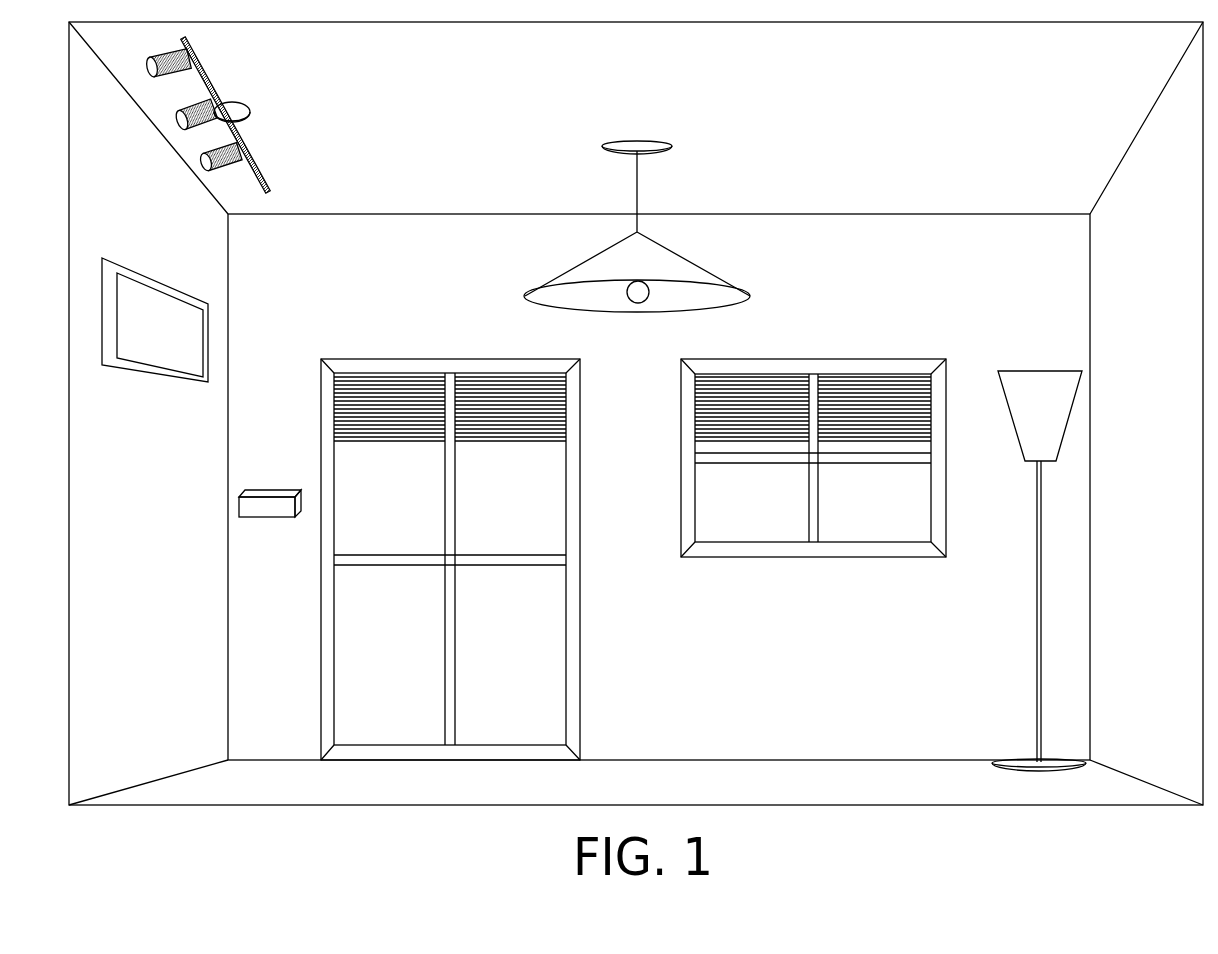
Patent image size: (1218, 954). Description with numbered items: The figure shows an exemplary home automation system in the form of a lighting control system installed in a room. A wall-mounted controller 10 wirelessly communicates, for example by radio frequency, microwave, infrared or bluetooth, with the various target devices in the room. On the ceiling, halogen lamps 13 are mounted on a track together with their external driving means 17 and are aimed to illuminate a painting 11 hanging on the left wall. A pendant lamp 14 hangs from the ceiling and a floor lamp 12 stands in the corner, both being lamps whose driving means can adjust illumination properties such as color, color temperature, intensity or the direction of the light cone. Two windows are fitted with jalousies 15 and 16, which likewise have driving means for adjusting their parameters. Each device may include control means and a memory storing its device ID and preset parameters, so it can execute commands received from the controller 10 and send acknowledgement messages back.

The controller 10 is at (271, 508).
The painting 11 is at (132, 308).
The lamp 12 is at (1036, 641).
The halogen lamps 13 is at (205, 138).
The lamp 14 is at (687, 252).
The jalousie 15 is at (395, 383).
The jalousie 16 is at (870, 382).
The external driving means 17 is at (250, 117).